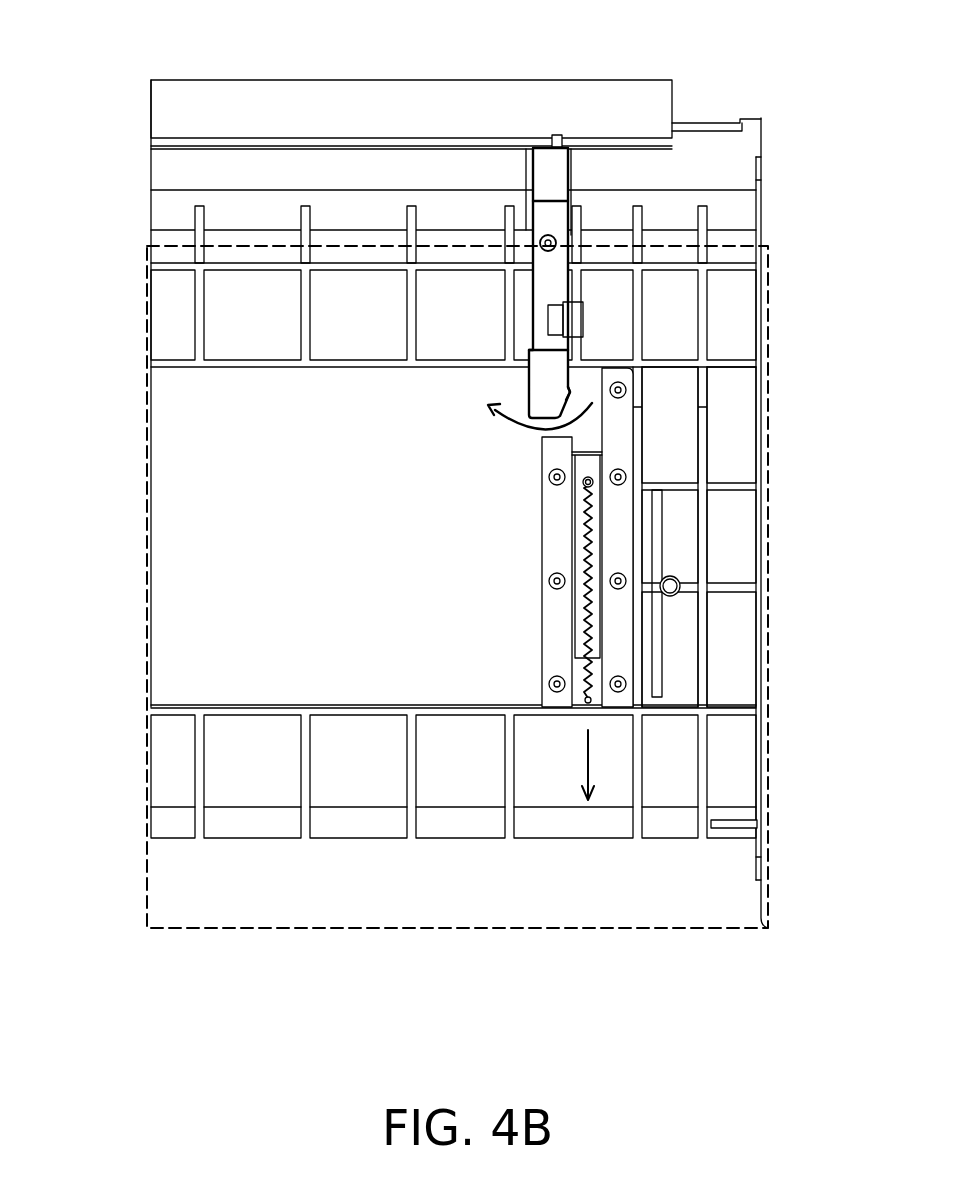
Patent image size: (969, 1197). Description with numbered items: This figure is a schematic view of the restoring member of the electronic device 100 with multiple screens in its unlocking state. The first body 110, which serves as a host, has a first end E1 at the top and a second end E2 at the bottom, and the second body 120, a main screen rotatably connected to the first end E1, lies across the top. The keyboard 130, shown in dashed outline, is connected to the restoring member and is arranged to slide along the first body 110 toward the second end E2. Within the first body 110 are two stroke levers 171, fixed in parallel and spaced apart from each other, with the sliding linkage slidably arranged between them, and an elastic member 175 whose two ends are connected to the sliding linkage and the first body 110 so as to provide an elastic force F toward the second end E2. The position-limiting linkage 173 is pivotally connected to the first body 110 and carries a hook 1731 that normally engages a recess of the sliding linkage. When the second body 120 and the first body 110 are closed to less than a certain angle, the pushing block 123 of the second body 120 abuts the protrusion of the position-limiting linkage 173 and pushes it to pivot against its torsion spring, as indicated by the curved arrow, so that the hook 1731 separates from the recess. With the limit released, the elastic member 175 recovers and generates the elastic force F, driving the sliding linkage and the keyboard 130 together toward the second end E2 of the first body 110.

The electronic device with multiple screens 100 is at (848, 1036).
The first body 110 is at (740, 542).
The second body 120 is at (456, 109).
The pushing block 123 is at (557, 133).
The keyboard 130 is at (147, 738).
The stroke levers 171 is at (560, 625).
The position-limiting linkage 173 is at (552, 219).
The hook 1731 is at (570, 392).
The elastic member 175 is at (587, 672).
The first end E1 is at (762, 118).
The second end E2 is at (757, 928).
The elastic force F is at (597, 765).